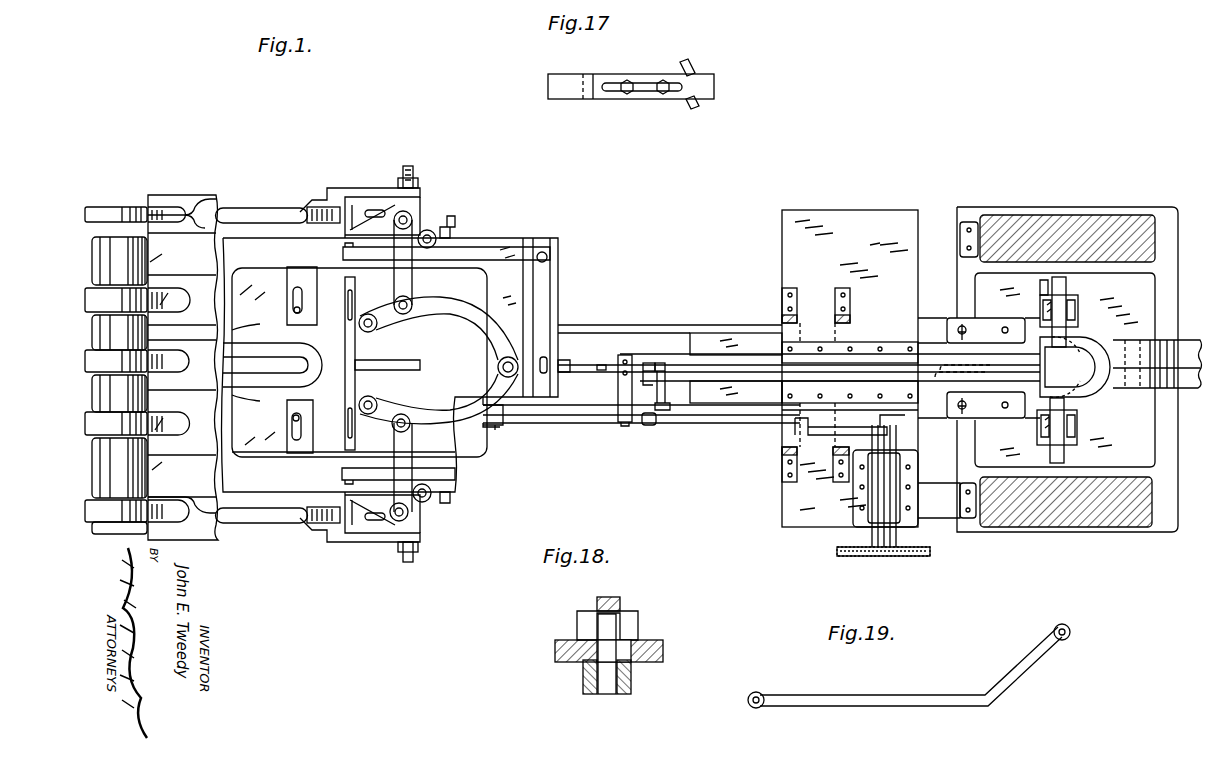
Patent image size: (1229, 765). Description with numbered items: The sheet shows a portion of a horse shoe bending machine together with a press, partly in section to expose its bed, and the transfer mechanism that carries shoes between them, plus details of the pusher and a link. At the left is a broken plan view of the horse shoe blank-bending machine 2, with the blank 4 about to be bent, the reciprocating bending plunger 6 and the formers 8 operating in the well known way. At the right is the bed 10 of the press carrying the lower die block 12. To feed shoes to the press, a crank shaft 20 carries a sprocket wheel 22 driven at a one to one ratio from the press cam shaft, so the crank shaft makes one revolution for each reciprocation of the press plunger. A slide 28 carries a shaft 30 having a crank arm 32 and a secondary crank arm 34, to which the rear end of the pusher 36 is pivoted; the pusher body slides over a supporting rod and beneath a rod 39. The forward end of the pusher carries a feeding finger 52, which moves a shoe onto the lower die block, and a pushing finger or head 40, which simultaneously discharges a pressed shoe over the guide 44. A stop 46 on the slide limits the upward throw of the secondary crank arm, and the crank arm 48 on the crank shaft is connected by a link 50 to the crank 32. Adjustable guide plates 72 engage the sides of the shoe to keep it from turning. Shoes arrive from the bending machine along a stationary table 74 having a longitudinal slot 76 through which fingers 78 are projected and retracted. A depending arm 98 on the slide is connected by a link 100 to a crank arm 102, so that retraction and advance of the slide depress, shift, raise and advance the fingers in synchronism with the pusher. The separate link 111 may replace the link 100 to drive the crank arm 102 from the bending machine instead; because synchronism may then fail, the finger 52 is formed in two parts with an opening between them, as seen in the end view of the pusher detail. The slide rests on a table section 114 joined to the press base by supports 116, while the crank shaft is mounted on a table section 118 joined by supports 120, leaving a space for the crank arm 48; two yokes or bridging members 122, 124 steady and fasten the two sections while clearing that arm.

In FIG. 1, the horse shoe blank-bending machine 2 is at (437, 237).
In FIG. 1, the blank 4 is at (355, 352).
In FIG. 1, the reciprocating bending plunger 6 is at (290, 378).
In FIG. 1, the formers 8 is at (443, 314).
In FIG. 1, the bed of the press 10 is at (1144, 288).
In FIG. 1, the lower die block 12 is at (1080, 398).
In FIG. 1, the crank shaft 20 is at (870, 532).
In FIG. 1, the sprocket wheel 22 is at (884, 556).
In FIG. 1, the slide 28 is at (763, 377).
In FIG. 1, the shaft 30 is at (645, 362).
In FIG. 1, the crank arm 32 is at (652, 427).
In FIG. 1, the secondary crank arm 34 is at (657, 362).
In FIG. 17, the pusher 36 is at (709, 86).
In FIG. 18, the pusher 36 is at (612, 597).
In FIG. 1, the rod 39 is at (1008, 360).
In FIG. 1, the pushing finger or head 40 is at (808, 424).
In FIG. 1, the guide 44 is at (1184, 353).
In FIG. 1, the stop 46 is at (650, 365).
In FIG. 1, the crank arm 48 is at (802, 466).
In FIG. 1, the link 50 is at (707, 423).
In FIG. 1, the feeding finger 52 is at (947, 378).
In FIG. 17, the feeding finger 52 is at (692, 62).
In FIG. 18, the feeding finger 52 is at (633, 628).
In FIG. 1, the guide plates 72 is at (958, 321).
In FIG. 1, the stationary table 74 is at (605, 330).
In FIG. 1, the longitudinal slot 76 is at (566, 365).
In FIG. 18, the longitudinal slot 76 is at (583, 665).
In FIG. 18, the fingers 78 is at (607, 675).
In FIG. 1, the depending arm 98 is at (617, 388).
In FIG. 1, the link 100 is at (546, 422).
In FIG. 1, the crank arm 102 is at (498, 424).
In FIG. 19, the link 111 is at (925, 695).
In FIG. 1, the table section 114 is at (845, 212).
In FIG. 1, the supports 116 is at (940, 222).
In FIG. 1, the table section 118 is at (790, 527).
In FIG. 1, the supports 120 is at (940, 514).
In FIG. 1, the yoke or bridging connecting member 122 is at (780, 299).
In FIG. 1, the yoke or bridging connecting member 124 is at (850, 302).